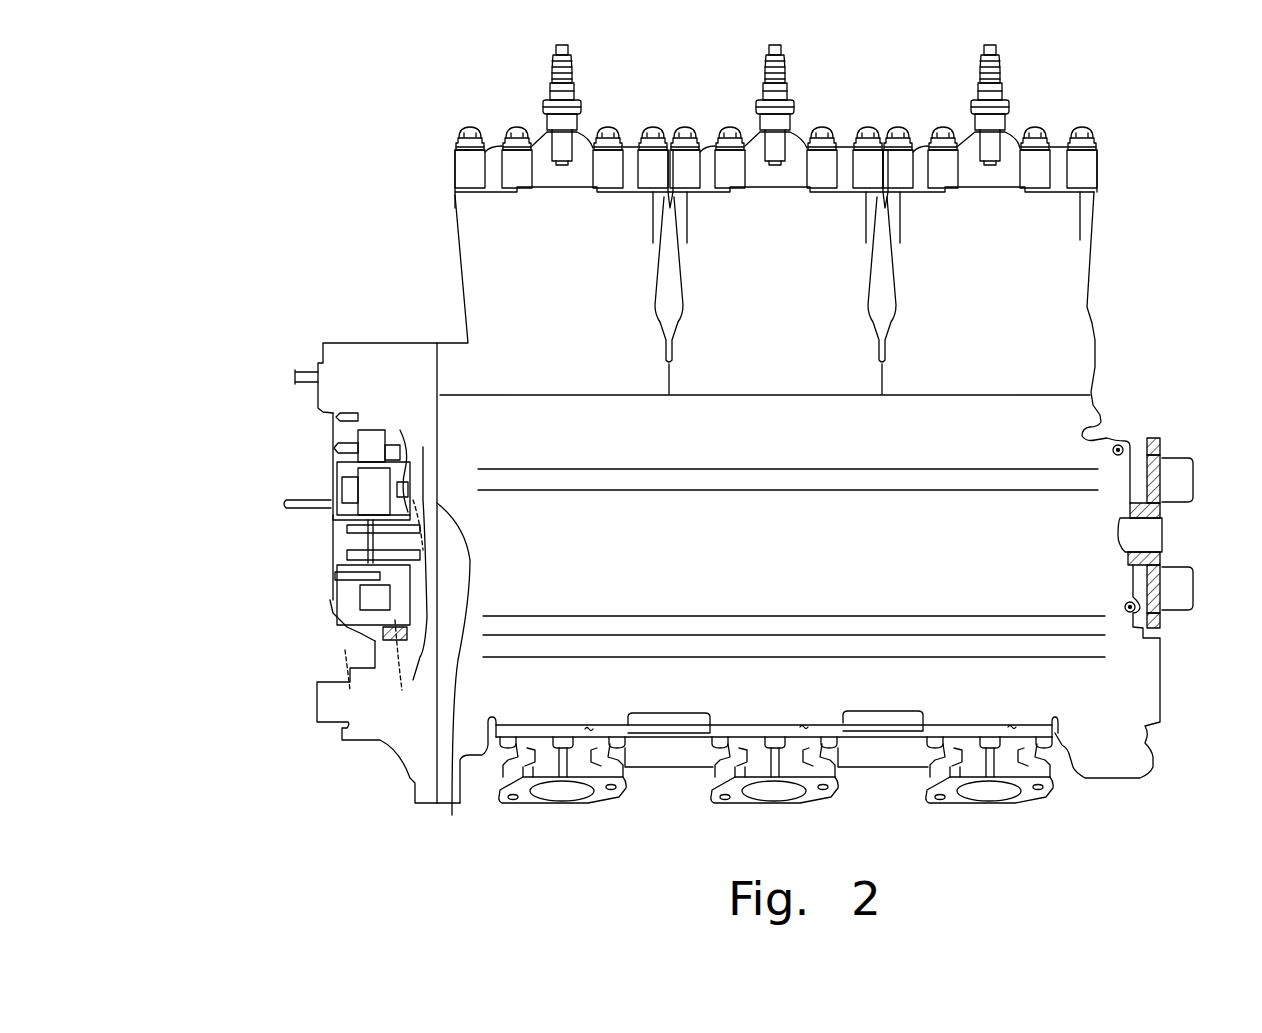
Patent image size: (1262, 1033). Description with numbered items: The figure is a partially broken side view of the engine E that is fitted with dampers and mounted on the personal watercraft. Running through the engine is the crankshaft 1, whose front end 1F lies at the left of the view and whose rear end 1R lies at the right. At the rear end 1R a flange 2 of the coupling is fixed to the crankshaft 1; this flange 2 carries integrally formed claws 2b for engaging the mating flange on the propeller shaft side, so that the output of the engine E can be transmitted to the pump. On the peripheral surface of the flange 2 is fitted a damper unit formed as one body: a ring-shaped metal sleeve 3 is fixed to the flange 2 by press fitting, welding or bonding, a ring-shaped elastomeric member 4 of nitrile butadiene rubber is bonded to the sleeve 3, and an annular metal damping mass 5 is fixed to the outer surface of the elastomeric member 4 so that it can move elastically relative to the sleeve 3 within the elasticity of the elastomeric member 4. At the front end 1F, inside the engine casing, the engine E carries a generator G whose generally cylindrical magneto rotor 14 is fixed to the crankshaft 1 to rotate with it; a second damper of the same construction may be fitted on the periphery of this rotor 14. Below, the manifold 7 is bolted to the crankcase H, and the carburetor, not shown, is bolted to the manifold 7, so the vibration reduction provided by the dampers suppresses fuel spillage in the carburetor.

The engine E is at (1129, 158).
The crankshaft 1 is at (393, 738).
The front end of the crankshaft 1F is at (453, 683).
The rear end of the crankshaft 1R is at (1137, 530).
The flange 2 is at (1160, 478).
The claws 2b is at (1182, 487).
The metal sleeve 3 is at (352, 620).
The elastomeric member 4 is at (385, 628).
The annular damping mass 5 is at (388, 658).
The manifold 7 is at (750, 803).
The magneto rotor 14 is at (423, 447).
The generator G is at (372, 486).
The crankcase H is at (872, 697).